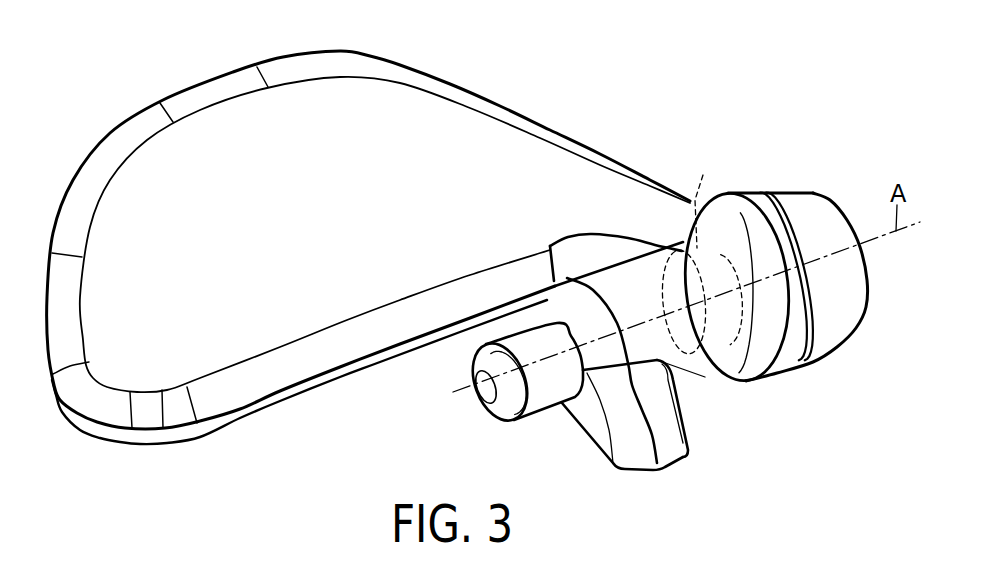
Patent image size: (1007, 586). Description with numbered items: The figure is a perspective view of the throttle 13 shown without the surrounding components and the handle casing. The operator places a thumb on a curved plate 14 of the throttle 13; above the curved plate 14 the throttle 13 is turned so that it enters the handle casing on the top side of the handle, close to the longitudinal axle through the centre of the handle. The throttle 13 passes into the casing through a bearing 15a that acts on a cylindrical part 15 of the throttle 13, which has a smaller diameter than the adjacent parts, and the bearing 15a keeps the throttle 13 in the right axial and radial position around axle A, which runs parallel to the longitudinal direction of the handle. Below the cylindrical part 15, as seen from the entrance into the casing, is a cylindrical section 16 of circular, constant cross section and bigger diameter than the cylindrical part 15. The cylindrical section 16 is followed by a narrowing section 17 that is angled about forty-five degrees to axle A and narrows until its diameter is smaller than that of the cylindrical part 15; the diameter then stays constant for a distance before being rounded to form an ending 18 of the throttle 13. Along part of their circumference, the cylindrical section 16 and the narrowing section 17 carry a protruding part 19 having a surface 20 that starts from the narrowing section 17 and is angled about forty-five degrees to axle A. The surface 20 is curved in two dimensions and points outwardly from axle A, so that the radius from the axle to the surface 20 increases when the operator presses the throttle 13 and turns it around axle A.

The throttle 13 is at (430, 70).
The curved plate 14 is at (257, 148).
The cylindrical part 15 is at (750, 380).
The bearing 15a is at (711, 195).
The cylindrical section 16 is at (700, 390).
The narrowing section 17 is at (460, 360).
The ending 18 is at (505, 414).
The protruding part 19 is at (667, 437).
The surface 20 is at (632, 453).